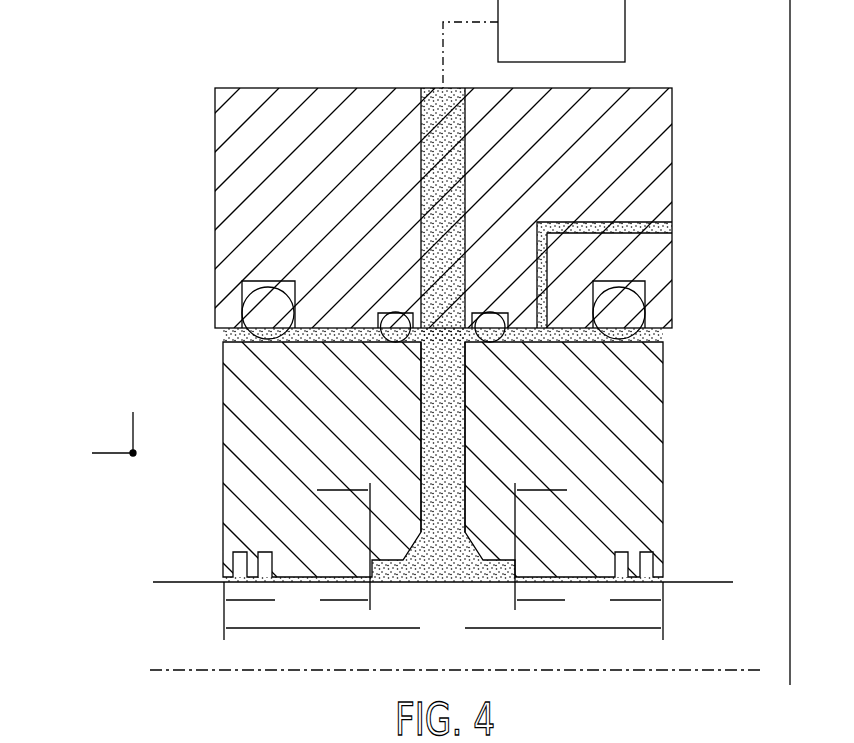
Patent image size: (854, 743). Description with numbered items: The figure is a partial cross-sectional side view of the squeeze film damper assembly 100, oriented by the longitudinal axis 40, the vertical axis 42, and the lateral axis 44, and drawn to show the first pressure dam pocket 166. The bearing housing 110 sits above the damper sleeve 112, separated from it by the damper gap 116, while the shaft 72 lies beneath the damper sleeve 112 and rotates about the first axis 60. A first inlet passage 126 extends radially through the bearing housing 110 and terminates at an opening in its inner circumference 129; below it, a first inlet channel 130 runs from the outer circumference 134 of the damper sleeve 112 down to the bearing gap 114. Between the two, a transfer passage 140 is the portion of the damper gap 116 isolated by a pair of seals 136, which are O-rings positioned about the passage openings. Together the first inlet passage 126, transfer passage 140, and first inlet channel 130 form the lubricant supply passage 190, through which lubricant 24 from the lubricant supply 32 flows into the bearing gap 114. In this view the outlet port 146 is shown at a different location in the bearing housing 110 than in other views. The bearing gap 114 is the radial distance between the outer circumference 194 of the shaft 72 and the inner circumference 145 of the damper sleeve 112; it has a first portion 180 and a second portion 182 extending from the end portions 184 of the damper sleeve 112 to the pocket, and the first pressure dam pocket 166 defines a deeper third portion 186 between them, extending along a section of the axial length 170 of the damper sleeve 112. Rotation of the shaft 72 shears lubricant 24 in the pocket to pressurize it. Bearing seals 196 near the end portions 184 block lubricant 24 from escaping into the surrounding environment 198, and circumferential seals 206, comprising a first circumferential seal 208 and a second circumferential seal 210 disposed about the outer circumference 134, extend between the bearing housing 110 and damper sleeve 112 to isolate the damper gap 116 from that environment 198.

The squeeze film damper assembly 100 is at (158, 98).
The lubricant supply 32 is at (625, 22).
The bearing housing 110 is at (652, 116).
The damper sleeve 112 is at (648, 407).
The first inlet passage 126 is at (419, 189).
The first inlet channel 130 is at (452, 430).
The lubricant supply passage 190 is at (470, 189).
The first pressure dam pocket 166 is at (416, 576).
The damper gap 116 is at (337, 333).
The inner circumference 129 is at (310, 327).
The outlet port 146 is at (653, 222).
The circumferential seals 206 is at (250, 299).
The first circumferential seal 208 is at (268, 304).
The second circumferential seal 210 is at (637, 316).
The seals 136 is at (384, 313).
The outer circumference 134 is at (300, 344).
The lubricant 24 is at (426, 402).
The transfer passage 140 is at (466, 348).
The third portion 186 is at (545, 488).
The inner circumference 145 is at (553, 577).
The bearing gap 114 is at (320, 570).
The environment 198 is at (186, 484).
The end portions 184 is at (218, 547).
The bearing seals 196 is at (262, 552).
The shaft 72 is at (698, 582).
The outer circumference 194 is at (667, 581).
The first axis 60 is at (575, 670).
The first portion 180 is at (296, 611).
The second portion 182 is at (590, 611).
The axial length 170 is at (443, 627).
The vertical axis 42 is at (133, 440).
The longitudinal axis 40 is at (125, 455).
The lateral axis 44 is at (132, 456).